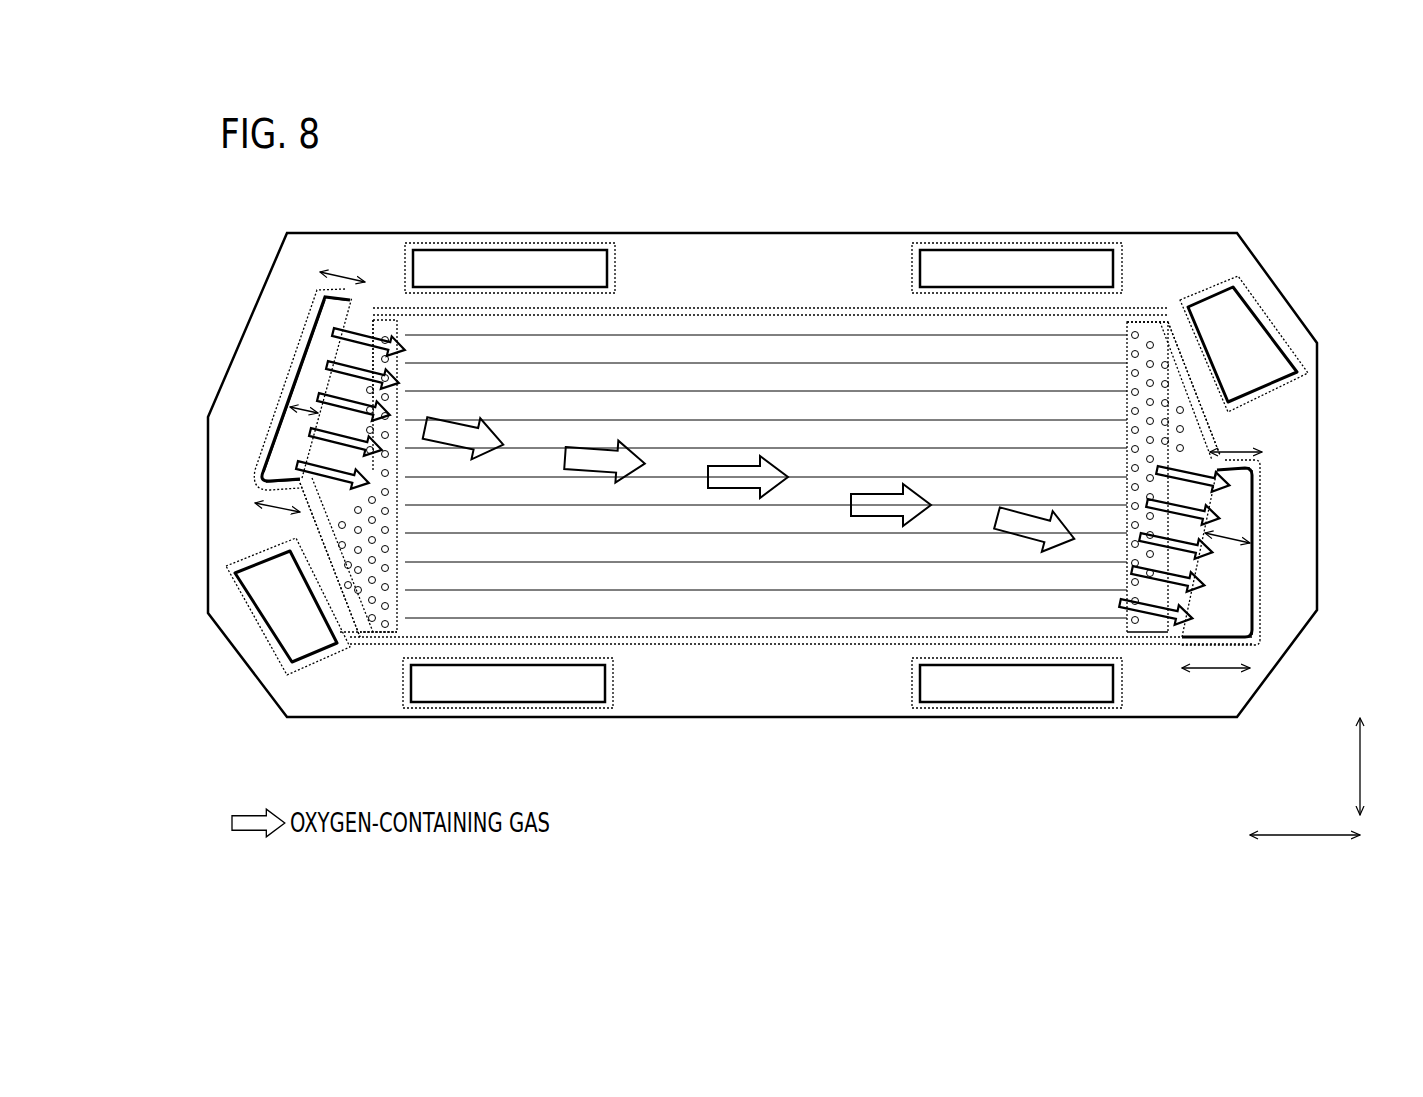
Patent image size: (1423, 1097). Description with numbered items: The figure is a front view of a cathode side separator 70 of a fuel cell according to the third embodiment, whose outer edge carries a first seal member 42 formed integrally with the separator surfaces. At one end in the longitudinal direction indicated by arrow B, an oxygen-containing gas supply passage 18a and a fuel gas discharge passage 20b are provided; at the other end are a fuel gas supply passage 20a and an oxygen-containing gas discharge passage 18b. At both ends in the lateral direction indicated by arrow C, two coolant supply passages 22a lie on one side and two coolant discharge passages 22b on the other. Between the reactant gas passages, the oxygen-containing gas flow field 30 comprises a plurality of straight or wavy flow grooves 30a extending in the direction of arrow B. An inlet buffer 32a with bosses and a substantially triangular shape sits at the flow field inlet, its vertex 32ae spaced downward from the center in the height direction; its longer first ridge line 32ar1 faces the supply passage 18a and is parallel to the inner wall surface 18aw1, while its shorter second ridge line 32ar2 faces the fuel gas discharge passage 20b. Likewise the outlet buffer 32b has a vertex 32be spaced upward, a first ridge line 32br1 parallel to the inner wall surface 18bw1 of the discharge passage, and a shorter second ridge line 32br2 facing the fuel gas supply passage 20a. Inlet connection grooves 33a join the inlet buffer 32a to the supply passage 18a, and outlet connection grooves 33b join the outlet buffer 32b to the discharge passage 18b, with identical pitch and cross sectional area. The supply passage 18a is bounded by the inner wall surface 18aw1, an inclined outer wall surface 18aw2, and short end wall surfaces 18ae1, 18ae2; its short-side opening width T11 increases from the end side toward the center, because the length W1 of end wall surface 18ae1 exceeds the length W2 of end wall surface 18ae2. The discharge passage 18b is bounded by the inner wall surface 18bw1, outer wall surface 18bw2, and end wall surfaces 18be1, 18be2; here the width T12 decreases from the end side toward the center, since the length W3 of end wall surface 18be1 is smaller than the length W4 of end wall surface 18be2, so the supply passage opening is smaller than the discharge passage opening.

The cathode side separator 70 is at (434, 166).
The first seal member 42 is at (748, 305).
The oxygen-containing gas flow field 30 is at (683, 580).
The flow grooves 30a is at (860, 550).
The coolant supply passages 22a is at (500, 268).
The coolant discharge passages 22b is at (960, 268).
The fuel gas supply passage 20a is at (1258, 355).
The fuel gas discharge passage 20b is at (262, 603).
The oxygen-containing gas supply passage 18a is at (325, 352).
The oxygen-containing gas discharge passage 18b is at (1222, 600).
The end wall surface 18ae1 is at (266, 470).
The end wall surface 18ae2 is at (325, 305).
The inner wall surface 18aw1 is at (300, 405).
The outer wall surface 18aw2 is at (330, 360).
The end wall surface 18be1 is at (1258, 470).
The end wall surface 18be2 is at (1228, 640).
The inner wall surface 18bw1 is at (1220, 505).
The outer wall surface 18bw2 is at (1248, 575).
The inlet buffer 32a is at (360, 540).
The outlet buffer 32b is at (1170, 414).
The vertex 32ae is at (335, 522).
The vertex 32be is at (1196, 432).
The first ridge line 32ar1 is at (368, 330).
The second ridge line 32ar2 is at (367, 596).
The first ridge line 32br1 is at (1160, 627).
The second ridge line 32br2 is at (1258, 338).
The inlet connection grooves 33a is at (352, 432).
The outlet connection grooves 33b is at (1180, 470).
The length of end wall surface 18ae1 W1 is at (255, 503).
The length of end wall surface 18ae2 W2 is at (342, 264).
The length of end wall surface 18be1 W3 is at (1255, 438).
The length of end wall surface 18be2 W4 is at (1216, 683).
The width of the opening on the short side T11 is at (290, 407).
The width of the opening on the short side T12 is at (1253, 537).
The longitudinal direction B is at (1305, 852).
The lateral direction C is at (1376, 766).